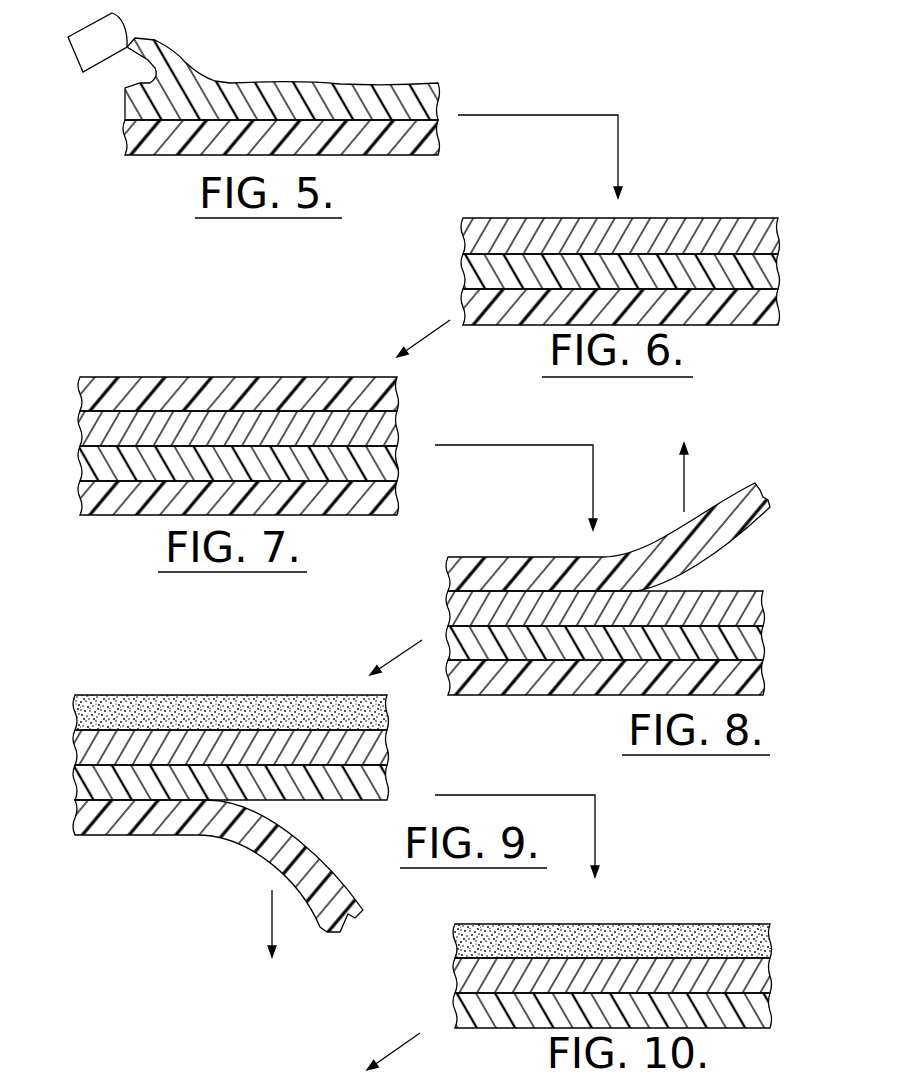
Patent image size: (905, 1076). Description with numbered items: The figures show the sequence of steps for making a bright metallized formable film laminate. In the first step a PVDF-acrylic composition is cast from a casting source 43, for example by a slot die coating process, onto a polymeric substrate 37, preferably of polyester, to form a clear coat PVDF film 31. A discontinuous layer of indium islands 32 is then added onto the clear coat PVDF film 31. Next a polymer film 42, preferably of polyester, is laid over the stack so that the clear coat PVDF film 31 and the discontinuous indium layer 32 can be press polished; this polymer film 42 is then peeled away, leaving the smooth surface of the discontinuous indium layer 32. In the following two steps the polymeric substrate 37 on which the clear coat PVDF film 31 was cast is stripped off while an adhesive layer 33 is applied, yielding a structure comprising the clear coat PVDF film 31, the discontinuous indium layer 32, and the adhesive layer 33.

In FIG. 5, the clear coat PVDF film 31 is at (126, 108).
In FIG. 6, the clear coat PVDF film 31 is at (779, 267).
In FIG. 7, the clear coat PVDF film 31 is at (81, 466).
In FIG. 8, the clear coat PVDF film 31 is at (765, 642).
In FIG. 9, the clear coat PVDF film 31 is at (76, 778).
In FIG. 10, the clear coat PVDF film 31 is at (772, 1004).
In FIG. 6, the discontinuous layer of indium islands 32 is at (779, 231).
In FIG. 7, the discontinuous layer of indium islands 32 is at (81, 432).
In FIG. 8, the discontinuous layer of indium islands 32 is at (765, 604).
In FIG. 9, the discontinuous layer of indium islands 32 is at (76, 747).
In FIG. 10, the discontinuous layer of indium islands 32 is at (772, 972).
In FIG. 9, the adhesive layer 33 is at (76, 713).
In FIG. 10, the adhesive layer 33 is at (772, 938).
In FIG. 5, the polymeric substrate 37 is at (126, 139).
In FIG. 6, the polymeric substrate 37 is at (779, 312).
In FIG. 7, the polymeric substrate 37 is at (81, 500).
In FIG. 8, the polymeric substrate 37 is at (765, 680).
In FIG. 9, the polymeric substrate 37 is at (321, 843).
In FIG. 7, the polymer film 42 is at (81, 400).
In FIG. 8, the polymer film 42 is at (727, 503).
In FIG. 5, the casting source 43 is at (97, 42).